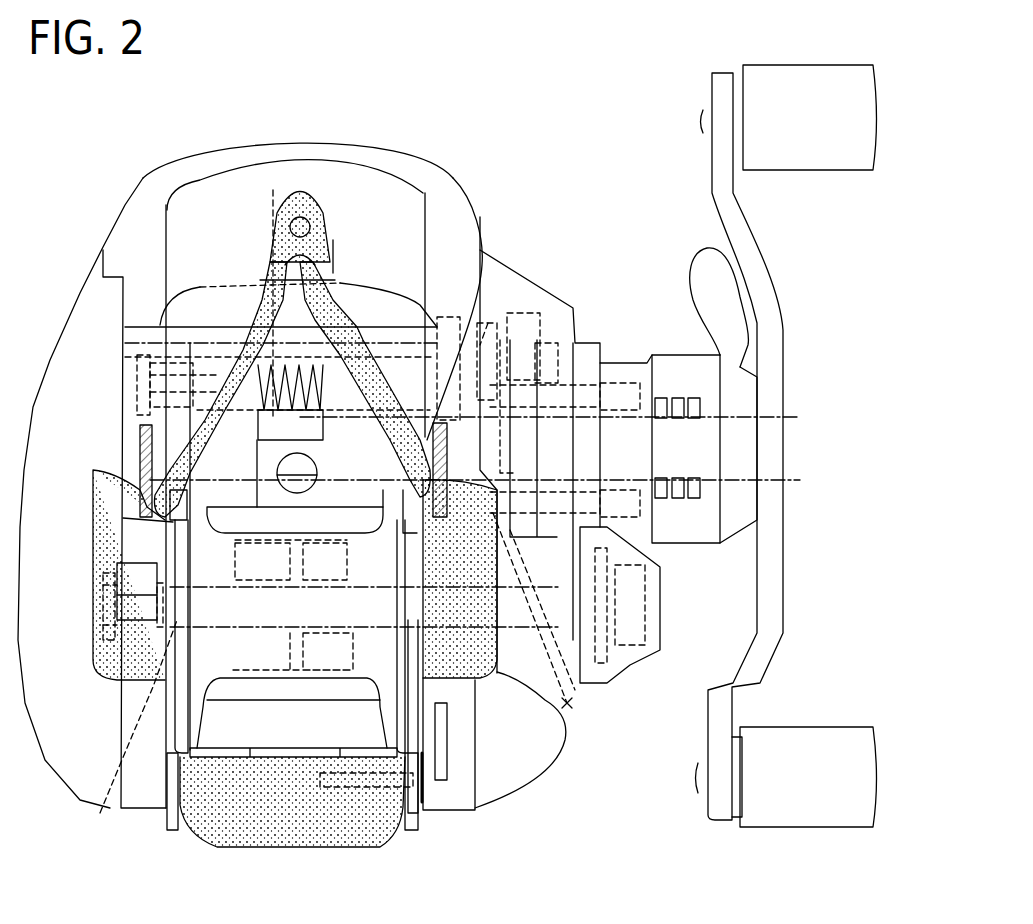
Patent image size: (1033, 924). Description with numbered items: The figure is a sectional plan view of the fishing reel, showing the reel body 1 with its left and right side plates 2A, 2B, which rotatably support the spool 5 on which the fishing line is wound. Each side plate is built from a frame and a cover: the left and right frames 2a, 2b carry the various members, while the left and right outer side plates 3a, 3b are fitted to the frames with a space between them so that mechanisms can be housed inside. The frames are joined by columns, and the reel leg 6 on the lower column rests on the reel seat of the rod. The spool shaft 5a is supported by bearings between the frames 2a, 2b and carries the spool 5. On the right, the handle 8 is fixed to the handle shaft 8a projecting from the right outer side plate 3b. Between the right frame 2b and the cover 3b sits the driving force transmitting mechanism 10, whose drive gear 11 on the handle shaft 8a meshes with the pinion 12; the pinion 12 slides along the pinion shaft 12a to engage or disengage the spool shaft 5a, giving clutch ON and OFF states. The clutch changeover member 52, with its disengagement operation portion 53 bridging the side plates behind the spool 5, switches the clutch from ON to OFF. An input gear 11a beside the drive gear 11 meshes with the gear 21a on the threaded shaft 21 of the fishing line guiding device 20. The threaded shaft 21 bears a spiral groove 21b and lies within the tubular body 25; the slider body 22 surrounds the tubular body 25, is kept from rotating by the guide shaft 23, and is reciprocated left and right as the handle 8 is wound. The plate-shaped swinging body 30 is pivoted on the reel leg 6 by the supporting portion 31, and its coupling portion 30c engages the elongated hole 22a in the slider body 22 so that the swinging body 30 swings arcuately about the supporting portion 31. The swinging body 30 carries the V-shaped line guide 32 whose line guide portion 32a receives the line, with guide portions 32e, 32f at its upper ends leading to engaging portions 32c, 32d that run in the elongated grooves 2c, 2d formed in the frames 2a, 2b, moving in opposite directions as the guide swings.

The reel body 1 is at (540, 757).
The left side plate 2A is at (88, 812).
The right side plate 2B is at (497, 805).
The left frame 2a is at (143, 802).
The right frame 2b is at (455, 800).
The elongated groove 2c is at (165, 550).
The elongated groove 2d is at (445, 478).
The left outer side plate 3a is at (80, 768).
The right outer side plate 3b is at (507, 767).
The spool 5 is at (220, 673).
The spool shaft 5a is at (133, 729).
The reel leg 6 is at (338, 462).
The handle 8 is at (737, 230).
The handle shaft 8a is at (733, 480).
The driving force transmitting mechanism 10 is at (582, 322).
The drive gear 11 is at (537, 323).
The input gear 11a is at (567, 700).
The pinion 12 is at (573, 717).
The pinion shaft 12a is at (655, 605).
The fishing line guiding device 20 is at (238, 192).
The threaded shaft 21 is at (220, 343).
The gear 21a is at (488, 323).
The spiral groove 21b is at (453, 353).
The slider body 22 is at (440, 187).
The elongated hole 22a is at (273, 187).
The guide shaft 23 is at (195, 360).
The tubular body 25 is at (193, 360).
The swinging body 30 is at (253, 452).
The coupling portion 30c is at (295, 183).
The supporting portion 31 is at (290, 467).
The line guide 32 is at (303, 217).
The line guide portion 32a is at (365, 327).
The engaging portion 32c is at (140, 457).
The engaging portion 32d is at (430, 440).
The guide portion 32e is at (217, 393).
The guide portion 32f is at (480, 217).
The clutch changeover member 52 is at (398, 807).
The disengagement operation portion 53 is at (325, 833).